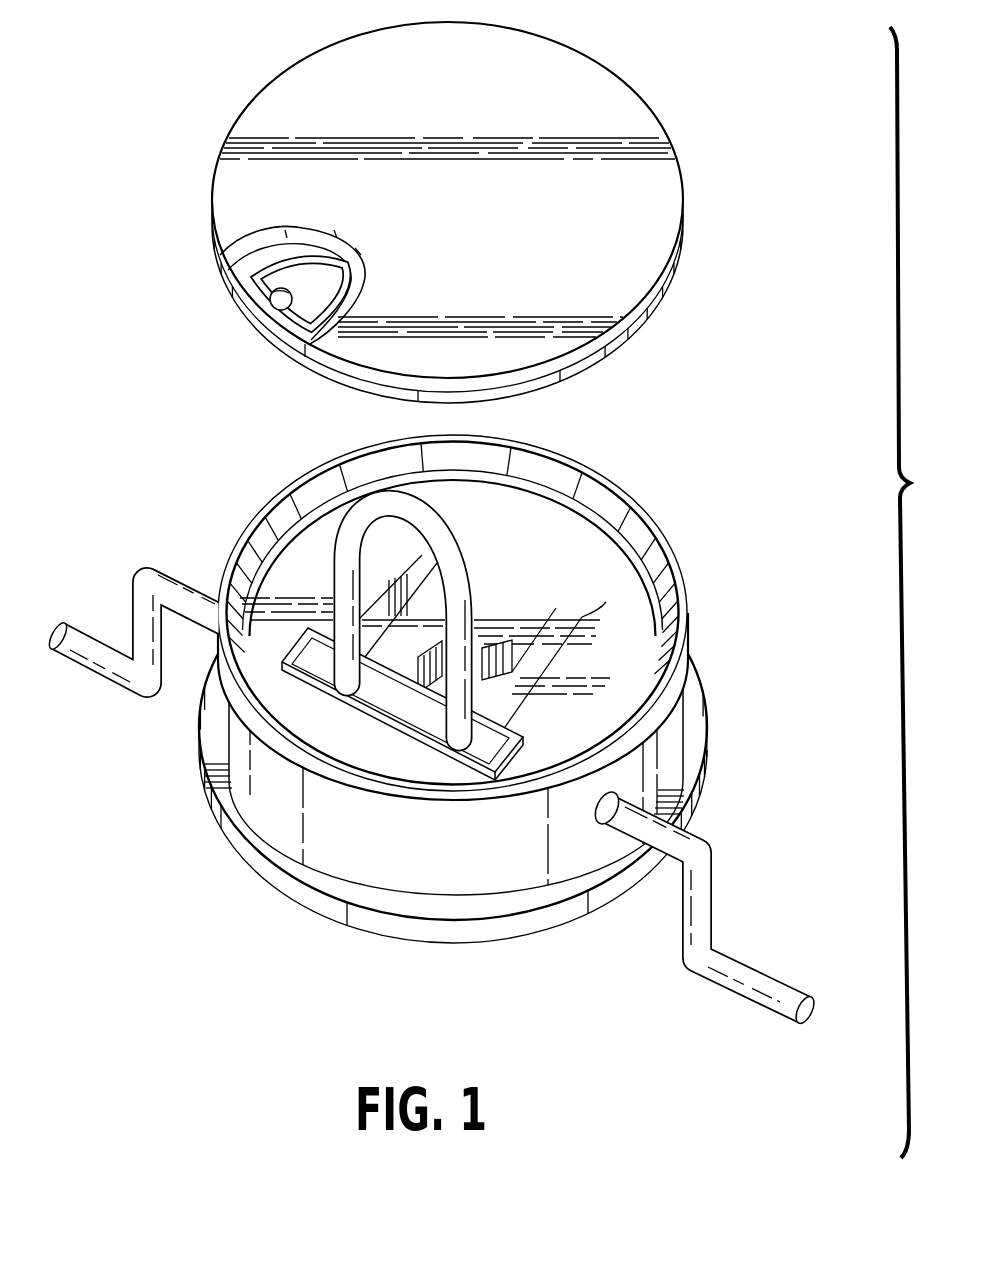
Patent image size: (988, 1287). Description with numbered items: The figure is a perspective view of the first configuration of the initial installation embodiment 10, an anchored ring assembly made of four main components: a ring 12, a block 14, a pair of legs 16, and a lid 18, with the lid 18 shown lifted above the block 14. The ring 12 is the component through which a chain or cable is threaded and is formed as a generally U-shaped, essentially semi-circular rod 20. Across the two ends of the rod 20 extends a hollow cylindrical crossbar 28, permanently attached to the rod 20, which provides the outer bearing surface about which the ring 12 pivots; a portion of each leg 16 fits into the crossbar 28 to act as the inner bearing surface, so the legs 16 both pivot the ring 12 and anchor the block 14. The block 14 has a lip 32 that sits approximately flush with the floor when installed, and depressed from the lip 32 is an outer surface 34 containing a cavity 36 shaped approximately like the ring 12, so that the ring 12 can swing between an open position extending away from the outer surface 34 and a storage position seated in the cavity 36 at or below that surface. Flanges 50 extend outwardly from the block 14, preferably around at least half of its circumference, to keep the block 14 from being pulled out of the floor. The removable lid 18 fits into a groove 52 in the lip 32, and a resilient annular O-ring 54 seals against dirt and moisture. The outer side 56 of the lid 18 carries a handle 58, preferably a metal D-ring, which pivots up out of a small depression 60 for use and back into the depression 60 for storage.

The initial installation embodiment 10 is at (820, 160).
The ring 12 is at (441, 608).
The block 14 is at (489, 696).
The legs 16 is at (102, 667).
The lid 18 is at (472, 212).
The rod 20 is at (478, 596).
The crossbar 28 is at (380, 700).
The lip 32 is at (655, 525).
The outer surface 34 is at (645, 675).
The cavity 36 is at (542, 642).
The flanges 50 is at (327, 917).
The groove 52 is at (597, 497).
The O-ring 54 is at (586, 343).
The outer side 56 is at (481, 215).
The handle 58 is at (304, 252).
The depression 60 is at (330, 258).